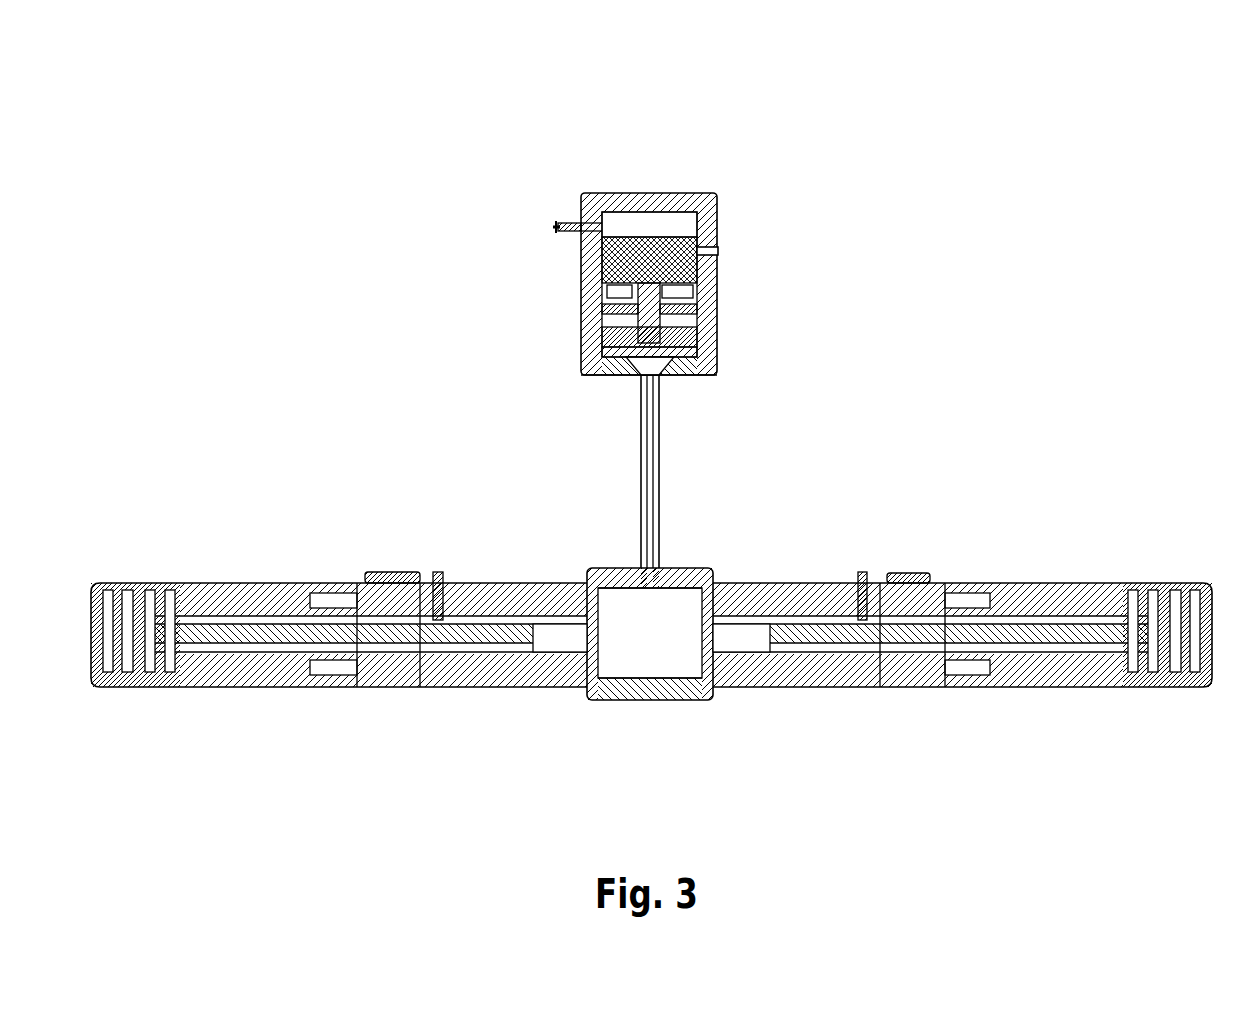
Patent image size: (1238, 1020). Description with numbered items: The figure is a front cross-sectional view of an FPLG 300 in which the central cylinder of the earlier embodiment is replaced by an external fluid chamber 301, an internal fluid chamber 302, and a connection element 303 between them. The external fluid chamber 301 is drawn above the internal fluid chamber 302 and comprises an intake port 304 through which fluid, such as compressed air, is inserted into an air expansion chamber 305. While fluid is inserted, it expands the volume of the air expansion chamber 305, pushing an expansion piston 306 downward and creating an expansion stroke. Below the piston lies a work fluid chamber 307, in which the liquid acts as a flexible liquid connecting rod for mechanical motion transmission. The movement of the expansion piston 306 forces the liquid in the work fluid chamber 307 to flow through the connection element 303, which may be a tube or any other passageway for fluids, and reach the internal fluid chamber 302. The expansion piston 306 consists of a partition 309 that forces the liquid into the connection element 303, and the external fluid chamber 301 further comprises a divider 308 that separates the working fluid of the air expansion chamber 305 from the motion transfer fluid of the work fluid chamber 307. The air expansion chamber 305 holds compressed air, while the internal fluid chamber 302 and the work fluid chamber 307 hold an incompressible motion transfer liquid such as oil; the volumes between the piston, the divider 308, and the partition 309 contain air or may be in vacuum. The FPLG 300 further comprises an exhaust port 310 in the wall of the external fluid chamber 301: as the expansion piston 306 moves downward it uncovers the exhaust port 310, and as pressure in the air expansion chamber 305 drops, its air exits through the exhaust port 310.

The FPLG 300 is at (245, 137).
The external fluid chamber 301 is at (750, 147).
The internal fluid chamber 302 is at (670, 608).
The connection element 303 is at (625, 465).
The intake port 304 is at (538, 210).
The air expansion chamber 305 is at (677, 223).
The expansion piston 306 is at (630, 259).
The work fluid chamber 307 is at (682, 352).
The divider 308 is at (617, 337).
The partition 309 is at (613, 312).
The exhaust port 310 is at (720, 252).